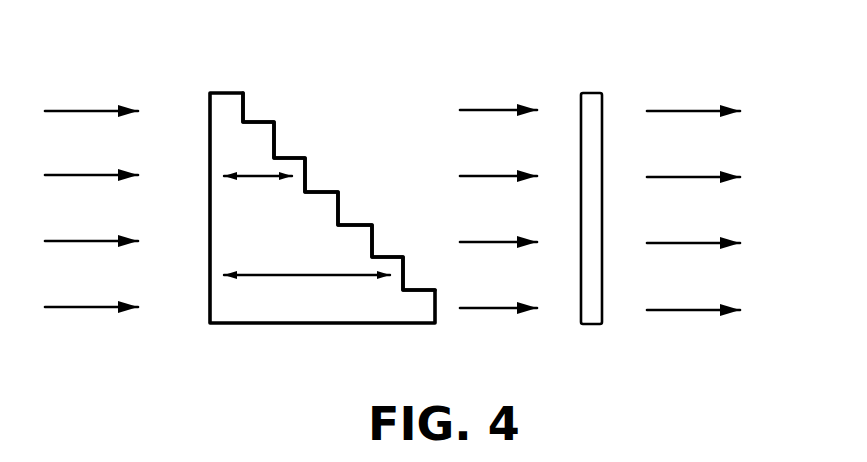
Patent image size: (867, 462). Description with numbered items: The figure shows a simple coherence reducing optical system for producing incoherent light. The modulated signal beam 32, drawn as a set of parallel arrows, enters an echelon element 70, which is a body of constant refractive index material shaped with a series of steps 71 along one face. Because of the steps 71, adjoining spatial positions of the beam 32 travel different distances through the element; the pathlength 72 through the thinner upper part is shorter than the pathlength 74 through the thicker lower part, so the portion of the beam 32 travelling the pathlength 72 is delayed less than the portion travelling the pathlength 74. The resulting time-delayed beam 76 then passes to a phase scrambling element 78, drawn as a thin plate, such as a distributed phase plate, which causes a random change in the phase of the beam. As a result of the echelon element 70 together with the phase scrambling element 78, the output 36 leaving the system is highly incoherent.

The modulated signal beam 32 is at (121, 176).
The echelon element 70 is at (228, 118).
The steps 71 is at (243, 113).
The pathlength 72 is at (260, 177).
The pathlength 74 is at (317, 275).
The time-delayed beam 76 is at (510, 176).
The phase scrambling element 78 is at (593, 93).
The output 36 is at (708, 177).